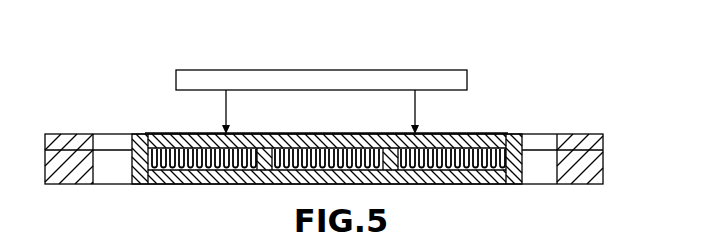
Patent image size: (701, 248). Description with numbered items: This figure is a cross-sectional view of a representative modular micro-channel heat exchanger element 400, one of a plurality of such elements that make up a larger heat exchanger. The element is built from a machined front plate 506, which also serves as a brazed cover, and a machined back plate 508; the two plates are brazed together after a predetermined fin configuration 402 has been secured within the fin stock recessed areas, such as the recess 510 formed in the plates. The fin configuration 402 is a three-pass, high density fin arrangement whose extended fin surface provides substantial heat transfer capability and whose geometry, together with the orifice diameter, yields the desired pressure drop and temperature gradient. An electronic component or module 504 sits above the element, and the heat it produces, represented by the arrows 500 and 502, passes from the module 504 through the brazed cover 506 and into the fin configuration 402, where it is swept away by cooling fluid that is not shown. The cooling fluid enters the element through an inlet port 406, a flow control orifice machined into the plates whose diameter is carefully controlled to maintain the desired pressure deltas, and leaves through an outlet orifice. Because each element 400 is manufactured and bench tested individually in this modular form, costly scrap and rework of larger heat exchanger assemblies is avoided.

The micro-channel heat exchanger element 400 is at (127, 129).
The fin configuration 402 is at (367, 133).
The inlet port 406 is at (518, 134).
The arrow representing heat 500 is at (226, 108).
The arrow representing heat 502 is at (416, 104).
The electronic component or module 504 is at (313, 70).
The front plate 506 is at (430, 166).
The back plate 508 is at (206, 184).
The recess 510 is at (150, 166).